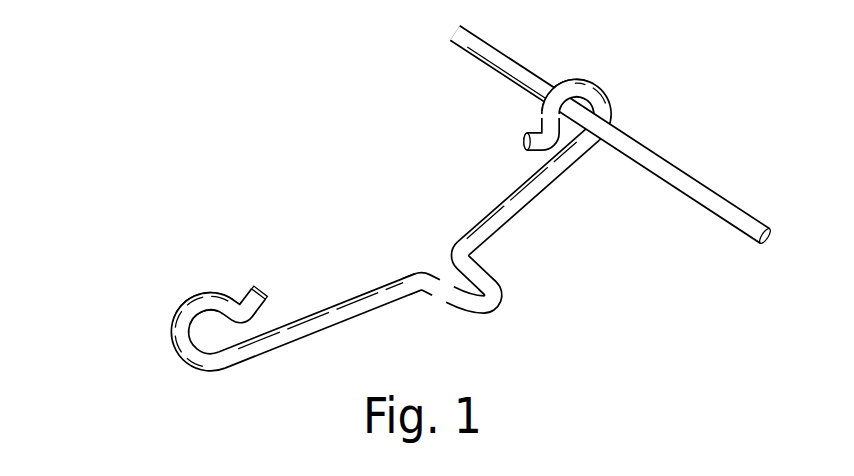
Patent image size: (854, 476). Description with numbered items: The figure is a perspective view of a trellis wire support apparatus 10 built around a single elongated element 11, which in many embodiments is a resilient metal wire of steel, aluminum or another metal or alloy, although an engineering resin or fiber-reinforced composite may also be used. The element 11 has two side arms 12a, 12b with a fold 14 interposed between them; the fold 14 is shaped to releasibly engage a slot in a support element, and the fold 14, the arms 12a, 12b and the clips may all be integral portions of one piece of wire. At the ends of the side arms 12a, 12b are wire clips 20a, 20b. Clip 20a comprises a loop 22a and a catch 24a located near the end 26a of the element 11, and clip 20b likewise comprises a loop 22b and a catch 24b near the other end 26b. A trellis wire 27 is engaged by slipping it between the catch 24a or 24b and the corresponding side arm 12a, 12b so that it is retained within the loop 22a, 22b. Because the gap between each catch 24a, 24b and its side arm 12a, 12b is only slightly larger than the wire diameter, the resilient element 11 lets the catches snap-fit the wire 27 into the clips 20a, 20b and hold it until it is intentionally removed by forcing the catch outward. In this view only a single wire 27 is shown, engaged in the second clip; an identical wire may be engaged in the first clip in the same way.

The trellis wire support apparatus 10 is at (178, 133).
The elongated element 11 is at (398, 278).
The side arm 12a is at (310, 328).
The side arm 12b is at (538, 188).
The fold 14 is at (490, 300).
The wire clip 20a is at (183, 348).
The wire clip 20b is at (607, 99).
The loop 22a is at (198, 294).
The loop 22b is at (565, 80).
The catch 24a is at (270, 313).
The catch 24b is at (555, 147).
The end 26a is at (257, 289).
The end 26b is at (524, 139).
The trellis wire 27 is at (684, 180).